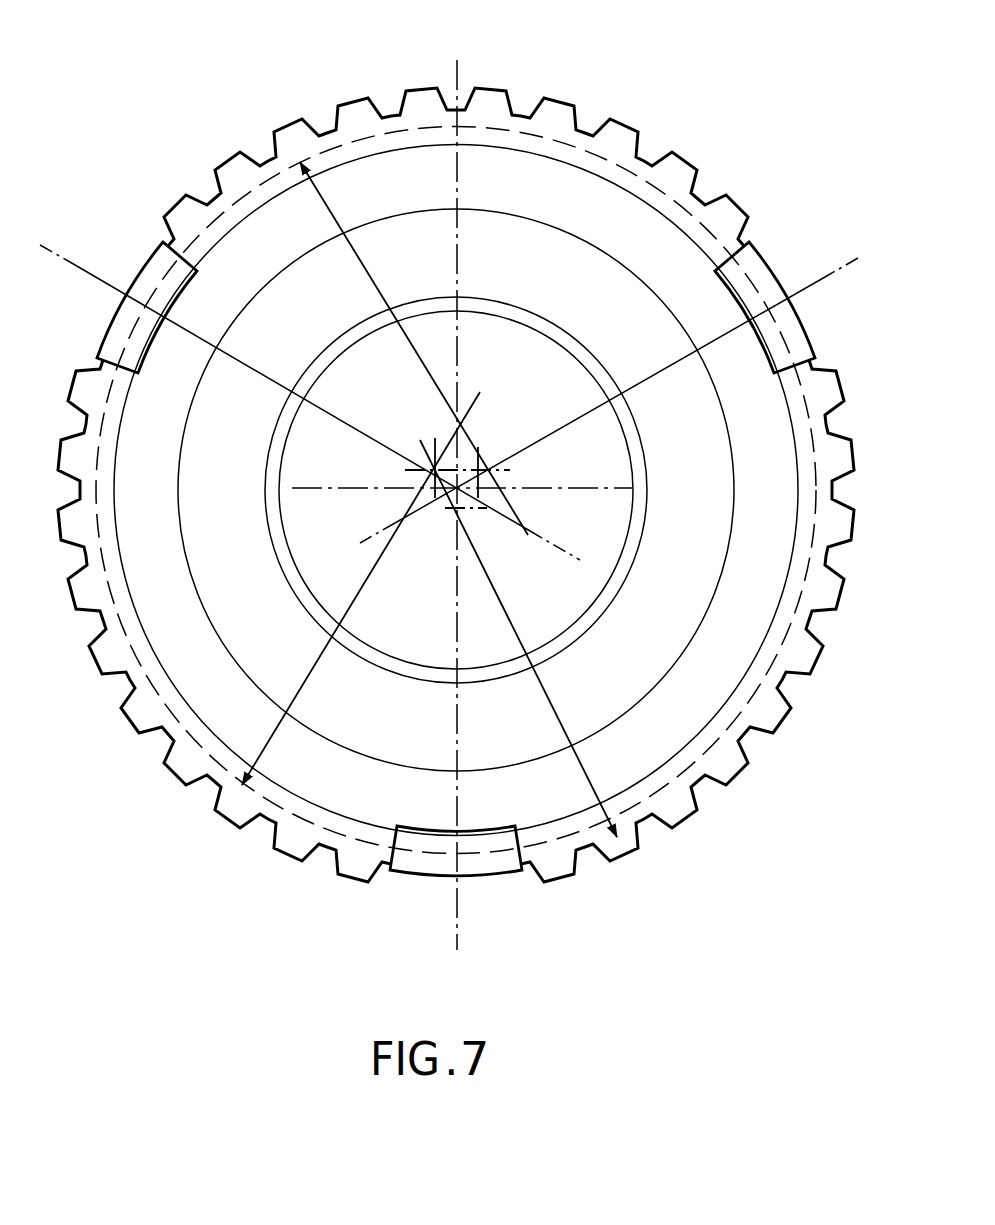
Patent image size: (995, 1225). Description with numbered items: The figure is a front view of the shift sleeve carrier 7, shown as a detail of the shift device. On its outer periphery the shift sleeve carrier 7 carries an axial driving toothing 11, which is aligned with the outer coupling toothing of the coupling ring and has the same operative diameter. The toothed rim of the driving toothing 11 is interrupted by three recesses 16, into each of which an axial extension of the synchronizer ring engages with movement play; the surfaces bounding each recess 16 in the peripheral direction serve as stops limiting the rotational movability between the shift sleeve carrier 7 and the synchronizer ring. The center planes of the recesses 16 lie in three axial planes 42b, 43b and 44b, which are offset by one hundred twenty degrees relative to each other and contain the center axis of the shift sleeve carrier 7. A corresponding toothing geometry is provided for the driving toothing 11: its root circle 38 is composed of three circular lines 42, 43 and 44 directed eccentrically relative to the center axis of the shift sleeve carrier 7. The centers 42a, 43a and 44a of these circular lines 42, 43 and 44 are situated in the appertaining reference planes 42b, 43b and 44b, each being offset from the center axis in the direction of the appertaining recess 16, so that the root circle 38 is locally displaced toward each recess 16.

The shift sleeve carrier 7 is at (704, 114).
The driving toothing 11 is at (634, 116).
The recesses 16 is at (172, 290).
The root circle 38 is at (708, 189).
The circular line 42 is at (310, 808).
The center 42a is at (432, 462).
The axial plane 42b is at (72, 244).
The circular line 43 is at (253, 186).
The center 43a is at (486, 462).
The axial plane 43b is at (818, 263).
The circular line 44 is at (808, 496).
The center 44a is at (450, 513).
The axial plane 44b is at (462, 240).